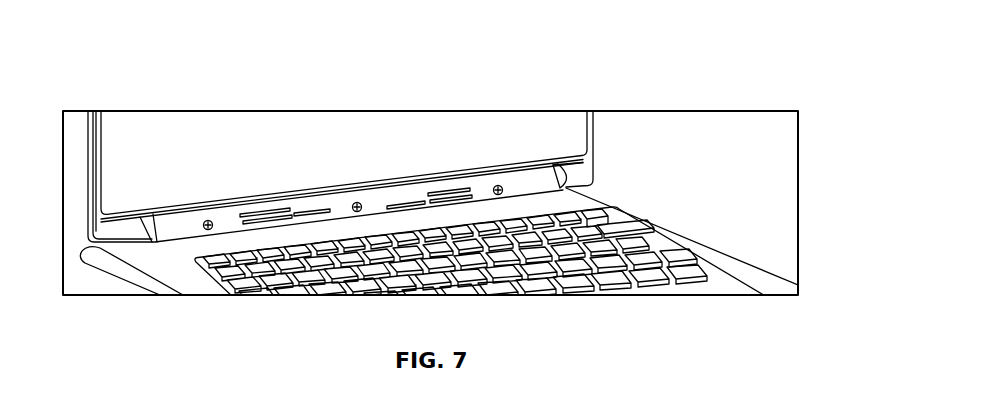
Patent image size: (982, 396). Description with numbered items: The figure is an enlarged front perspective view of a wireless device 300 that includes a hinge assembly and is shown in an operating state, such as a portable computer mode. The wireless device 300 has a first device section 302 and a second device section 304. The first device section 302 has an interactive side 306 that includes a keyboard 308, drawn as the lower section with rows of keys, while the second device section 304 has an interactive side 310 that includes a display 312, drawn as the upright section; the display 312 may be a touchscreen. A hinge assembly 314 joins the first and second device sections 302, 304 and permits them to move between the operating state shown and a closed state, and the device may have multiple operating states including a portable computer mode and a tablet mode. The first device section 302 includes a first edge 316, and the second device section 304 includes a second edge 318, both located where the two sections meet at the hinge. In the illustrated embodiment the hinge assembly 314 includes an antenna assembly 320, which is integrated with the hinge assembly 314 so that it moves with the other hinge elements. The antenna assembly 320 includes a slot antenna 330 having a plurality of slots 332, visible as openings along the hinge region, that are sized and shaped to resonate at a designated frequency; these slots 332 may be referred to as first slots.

The wireless device 300 is at (645, 85).
The first device section 302 is at (688, 248).
The second device section 304 is at (538, 135).
The interactive side 306 is at (646, 218).
The keyboard 308 is at (700, 272).
The interactive side 310 is at (425, 148).
The display 312 is at (353, 142).
The hinge assembly 314 is at (229, 212).
The first edge 316 is at (185, 237).
The second edge 318 is at (141, 217).
The antenna assembly 320 is at (476, 187).
The slot antenna 330 is at (308, 207).
The slots 332 is at (272, 210).